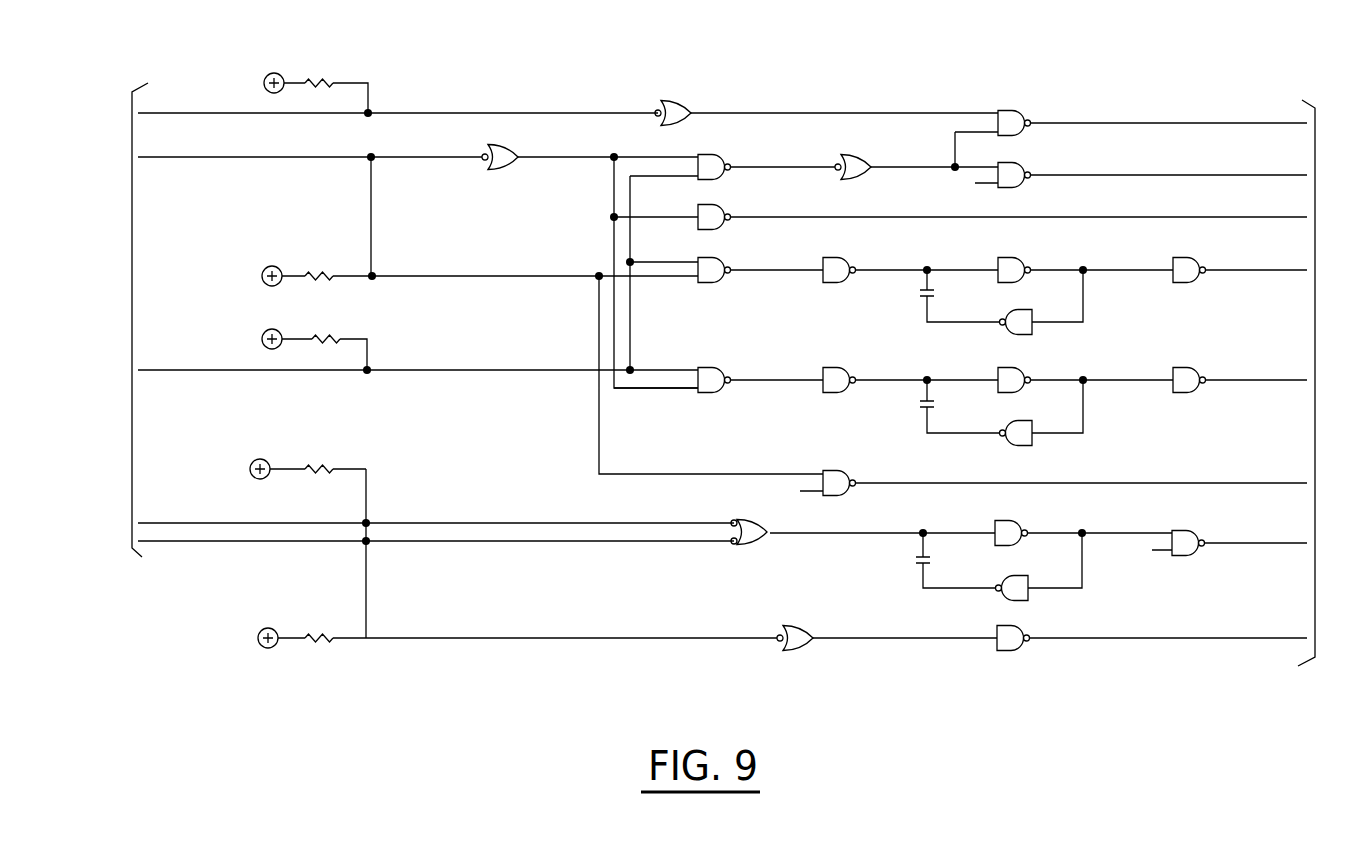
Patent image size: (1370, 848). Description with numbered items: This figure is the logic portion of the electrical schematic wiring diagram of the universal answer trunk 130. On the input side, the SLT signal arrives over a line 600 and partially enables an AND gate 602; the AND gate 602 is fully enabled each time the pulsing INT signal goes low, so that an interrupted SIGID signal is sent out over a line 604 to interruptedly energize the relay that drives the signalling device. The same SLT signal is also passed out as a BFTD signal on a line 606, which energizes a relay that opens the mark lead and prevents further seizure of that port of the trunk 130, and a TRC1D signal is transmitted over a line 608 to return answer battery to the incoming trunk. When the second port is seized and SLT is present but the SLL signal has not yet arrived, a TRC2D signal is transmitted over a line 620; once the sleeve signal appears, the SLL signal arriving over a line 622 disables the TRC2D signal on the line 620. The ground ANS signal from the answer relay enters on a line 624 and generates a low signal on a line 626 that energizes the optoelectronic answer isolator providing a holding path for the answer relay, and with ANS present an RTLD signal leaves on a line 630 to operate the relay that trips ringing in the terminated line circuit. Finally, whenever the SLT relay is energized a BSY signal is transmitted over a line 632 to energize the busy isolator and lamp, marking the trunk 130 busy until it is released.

The universal answer trunk 130 is at (728, 34).
The line 600 is at (285, 158).
The AND gate 602 is at (1008, 108).
The line 604 is at (1128, 123).
The line 606 is at (1160, 217).
The line 608 is at (1243, 271).
The line 620 is at (1247, 382).
The line 622 is at (237, 370).
The line 624 is at (285, 542).
The line 626 is at (1232, 546).
The line 630 is at (1202, 640).
The line 632 is at (1087, 483).